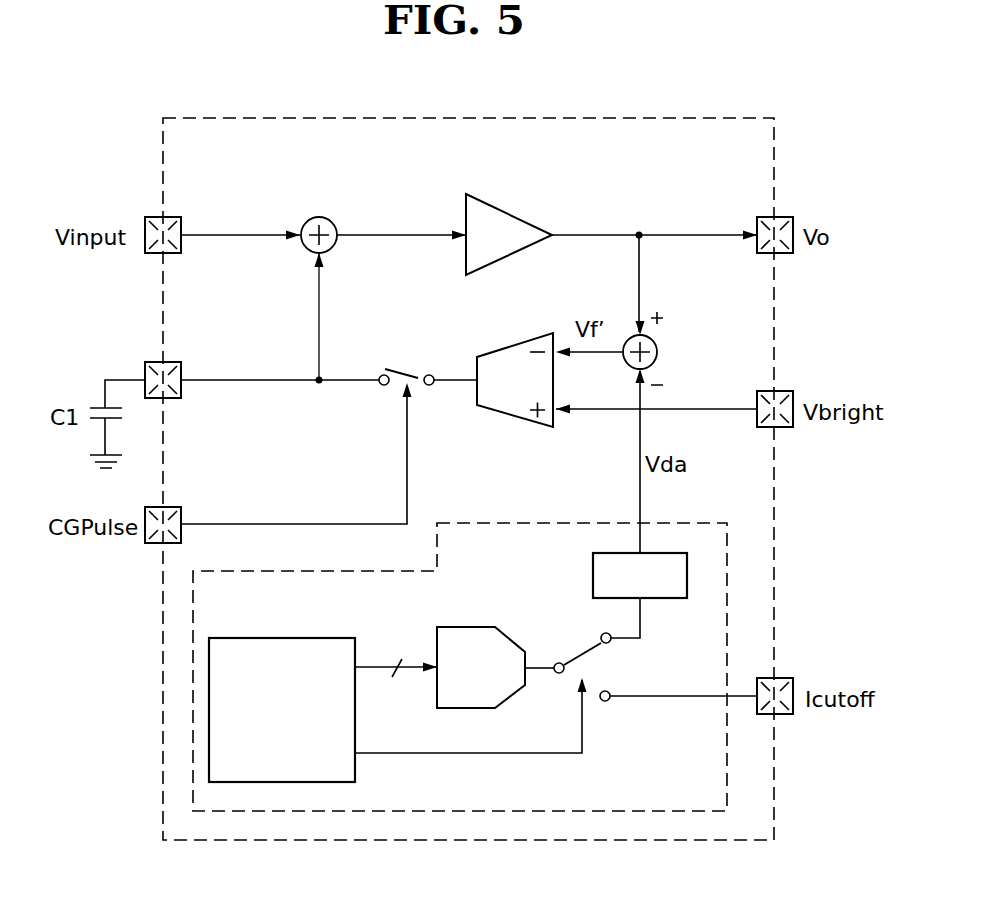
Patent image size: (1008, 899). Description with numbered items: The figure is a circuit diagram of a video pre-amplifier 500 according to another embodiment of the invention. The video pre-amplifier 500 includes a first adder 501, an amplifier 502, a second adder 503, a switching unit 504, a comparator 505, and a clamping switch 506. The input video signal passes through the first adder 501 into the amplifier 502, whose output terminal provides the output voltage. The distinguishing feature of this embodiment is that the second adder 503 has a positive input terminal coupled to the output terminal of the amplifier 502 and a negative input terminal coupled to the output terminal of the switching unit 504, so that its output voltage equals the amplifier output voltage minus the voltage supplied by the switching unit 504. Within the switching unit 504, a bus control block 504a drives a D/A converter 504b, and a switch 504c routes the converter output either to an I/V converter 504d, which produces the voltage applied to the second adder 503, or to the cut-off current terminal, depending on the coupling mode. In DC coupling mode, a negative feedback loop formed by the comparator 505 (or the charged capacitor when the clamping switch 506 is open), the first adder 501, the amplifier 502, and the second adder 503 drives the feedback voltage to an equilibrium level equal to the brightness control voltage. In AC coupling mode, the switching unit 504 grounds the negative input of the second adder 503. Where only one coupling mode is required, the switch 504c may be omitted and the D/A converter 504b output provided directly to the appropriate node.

The video pre-amplifier 500 is at (775, 137).
The first adder 501 is at (335, 219).
The amplifier 502 is at (499, 207).
The second adder 503 is at (658, 352).
The switching unit 504 is at (525, 522).
The bus control block 504a is at (287, 636).
The D/A converter 504b is at (472, 626).
The switch 504c is at (553, 676).
The I/V converter 504d is at (653, 600).
The comparator 505 is at (513, 347).
The clamping switch 506 is at (395, 364).